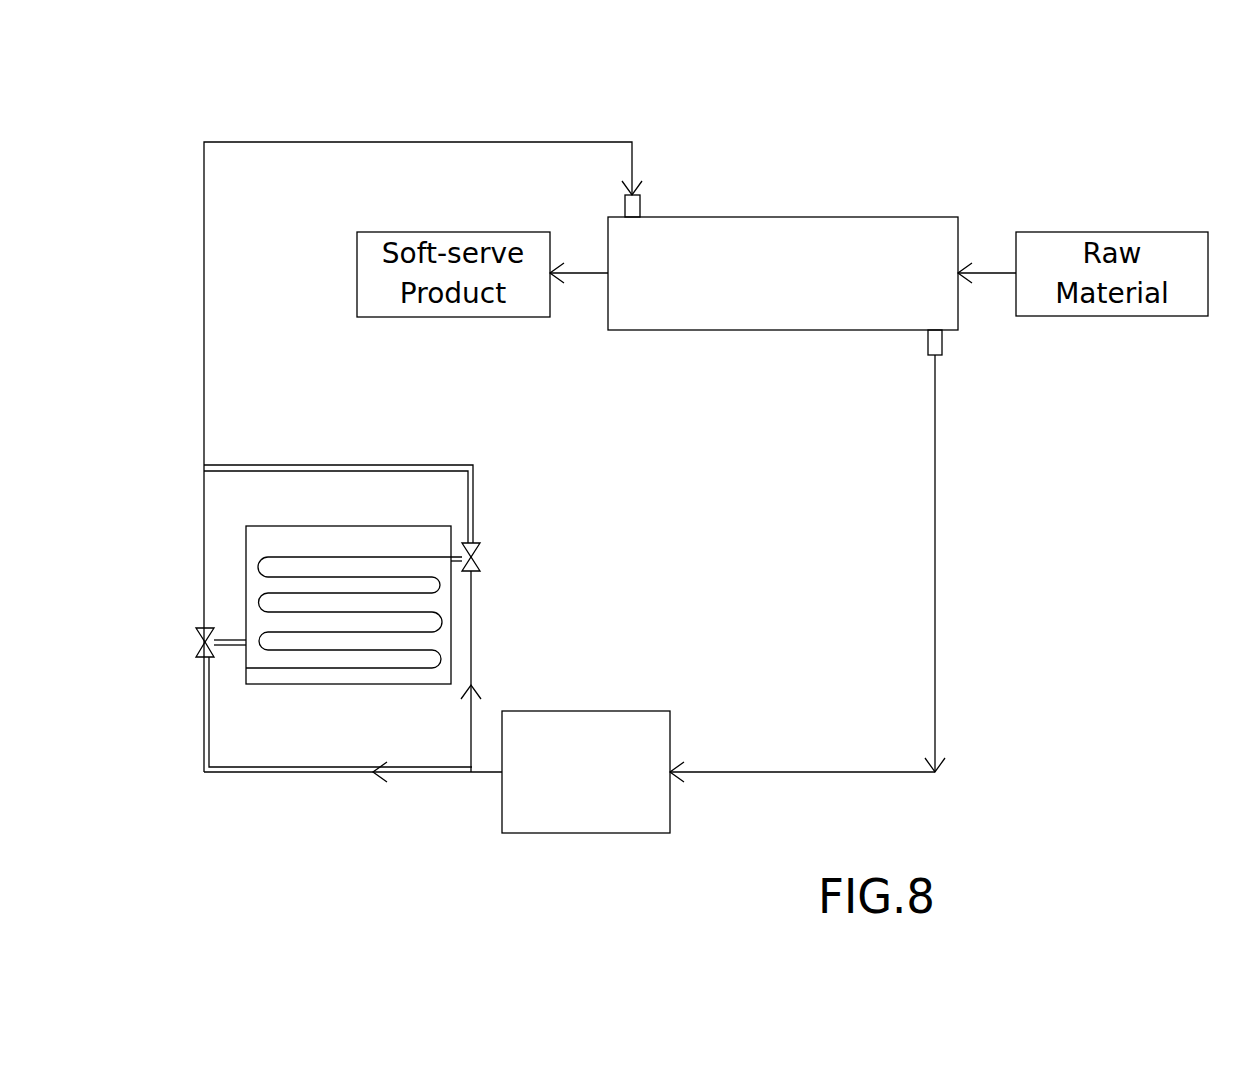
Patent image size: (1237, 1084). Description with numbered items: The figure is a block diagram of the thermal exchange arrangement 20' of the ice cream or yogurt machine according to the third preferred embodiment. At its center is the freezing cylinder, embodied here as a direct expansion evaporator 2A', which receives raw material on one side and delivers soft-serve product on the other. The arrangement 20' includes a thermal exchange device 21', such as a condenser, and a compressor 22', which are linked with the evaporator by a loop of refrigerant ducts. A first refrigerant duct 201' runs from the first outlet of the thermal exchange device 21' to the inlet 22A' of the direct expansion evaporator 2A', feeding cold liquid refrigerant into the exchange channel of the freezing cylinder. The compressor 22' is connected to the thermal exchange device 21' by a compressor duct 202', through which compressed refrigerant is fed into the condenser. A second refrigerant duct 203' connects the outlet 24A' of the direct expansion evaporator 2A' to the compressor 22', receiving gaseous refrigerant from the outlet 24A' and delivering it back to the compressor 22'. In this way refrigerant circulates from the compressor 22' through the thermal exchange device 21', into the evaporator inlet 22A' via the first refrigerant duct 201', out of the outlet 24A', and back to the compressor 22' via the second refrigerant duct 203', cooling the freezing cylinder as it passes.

The direct expansion evaporator 2A' is at (853, 205).
The thermal exchange arrangement 20' is at (923, 707).
The thermal exchange device 21' is at (338, 671).
The compressor 22' is at (615, 726).
The inlet 22A' is at (706, 184).
The outlet 24A' is at (1018, 374).
The first refrigerant duct 201' is at (423, 457).
The compressor duct 202' is at (538, 664).
The second refrigerant duct 203' is at (1024, 563).